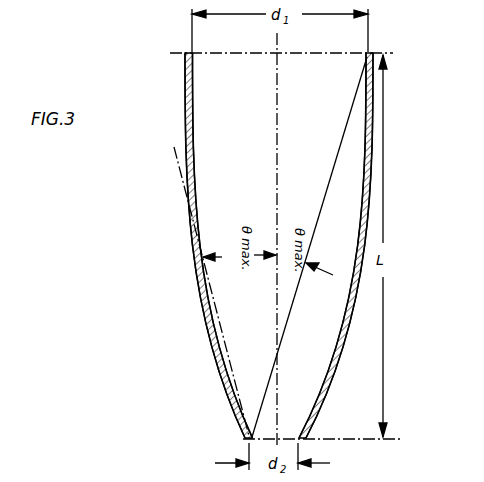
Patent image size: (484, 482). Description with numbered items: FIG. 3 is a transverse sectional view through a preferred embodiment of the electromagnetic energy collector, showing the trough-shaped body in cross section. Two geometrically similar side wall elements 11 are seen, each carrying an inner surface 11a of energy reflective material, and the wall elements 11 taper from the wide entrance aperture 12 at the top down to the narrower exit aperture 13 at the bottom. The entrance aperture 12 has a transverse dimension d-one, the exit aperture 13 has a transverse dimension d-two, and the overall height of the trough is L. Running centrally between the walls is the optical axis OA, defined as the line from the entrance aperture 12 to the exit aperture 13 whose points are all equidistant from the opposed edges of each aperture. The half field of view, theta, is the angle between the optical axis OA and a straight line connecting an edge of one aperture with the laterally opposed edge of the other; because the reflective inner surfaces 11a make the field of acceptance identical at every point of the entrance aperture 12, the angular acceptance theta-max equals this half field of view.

The side wall elements 11 is at (185, 92).
The inner surfaces 11a is at (193, 77).
The entrance aperture 12 is at (247, 53).
The exit aperture 13 is at (288, 440).
The optical axis OA is at (278, 165).